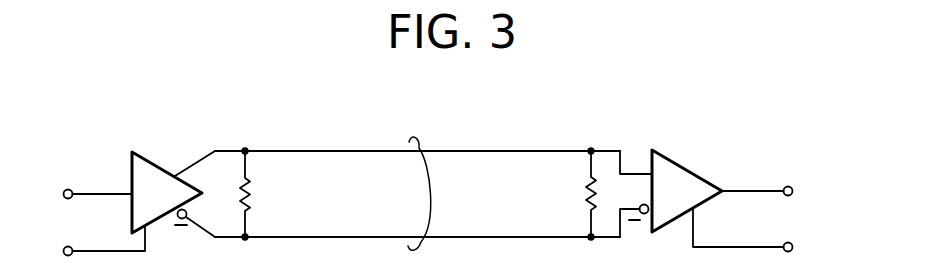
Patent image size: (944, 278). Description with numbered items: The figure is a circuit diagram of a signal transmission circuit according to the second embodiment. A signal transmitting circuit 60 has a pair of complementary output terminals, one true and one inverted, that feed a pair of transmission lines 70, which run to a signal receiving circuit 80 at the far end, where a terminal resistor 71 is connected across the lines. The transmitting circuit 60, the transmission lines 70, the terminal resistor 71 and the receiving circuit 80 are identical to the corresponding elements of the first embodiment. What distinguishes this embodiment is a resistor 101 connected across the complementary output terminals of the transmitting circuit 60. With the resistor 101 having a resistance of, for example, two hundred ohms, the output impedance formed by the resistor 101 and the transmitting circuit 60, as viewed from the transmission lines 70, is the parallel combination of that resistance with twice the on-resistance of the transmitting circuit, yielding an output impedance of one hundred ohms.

The signal transmitting circuit 60 is at (147, 160).
The transmission lines 70 is at (425, 144).
The terminal resistor 71 is at (584, 195).
The resistor 101 is at (254, 196).
The signal receiving circuit 80 is at (677, 164).